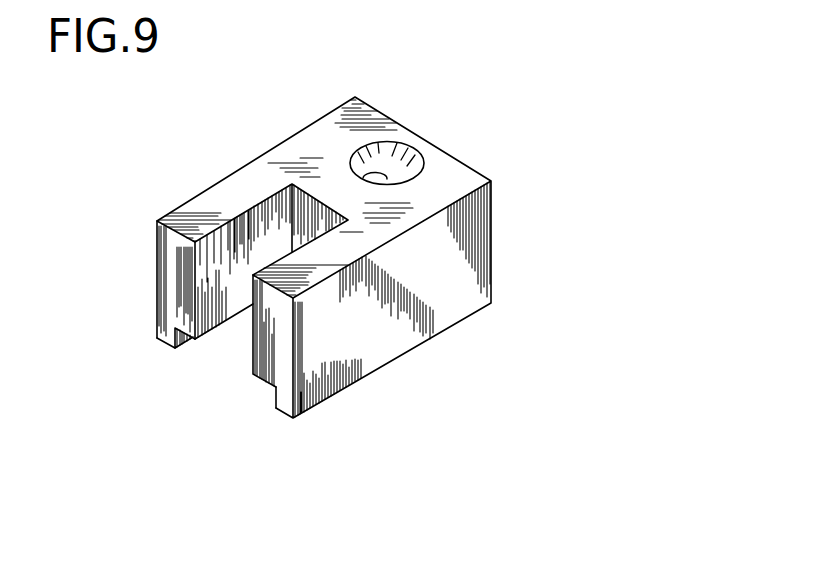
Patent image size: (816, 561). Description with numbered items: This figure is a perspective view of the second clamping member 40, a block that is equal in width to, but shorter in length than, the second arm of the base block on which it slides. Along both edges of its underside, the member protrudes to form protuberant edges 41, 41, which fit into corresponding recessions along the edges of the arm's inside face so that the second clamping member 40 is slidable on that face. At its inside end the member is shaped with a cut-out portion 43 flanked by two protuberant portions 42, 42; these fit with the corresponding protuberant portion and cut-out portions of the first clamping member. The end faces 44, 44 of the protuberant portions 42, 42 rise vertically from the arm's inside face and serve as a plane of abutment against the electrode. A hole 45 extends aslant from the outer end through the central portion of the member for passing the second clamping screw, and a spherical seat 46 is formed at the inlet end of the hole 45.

The second clamping member 40 is at (453, 144).
The protuberant edges 41 is at (175, 347).
The protuberant portions 42 is at (192, 214).
The cut-out portion 43 is at (263, 215).
The end faces 44 is at (175, 270).
The hole 45 is at (378, 177).
The spherical seat 46 is at (405, 157).